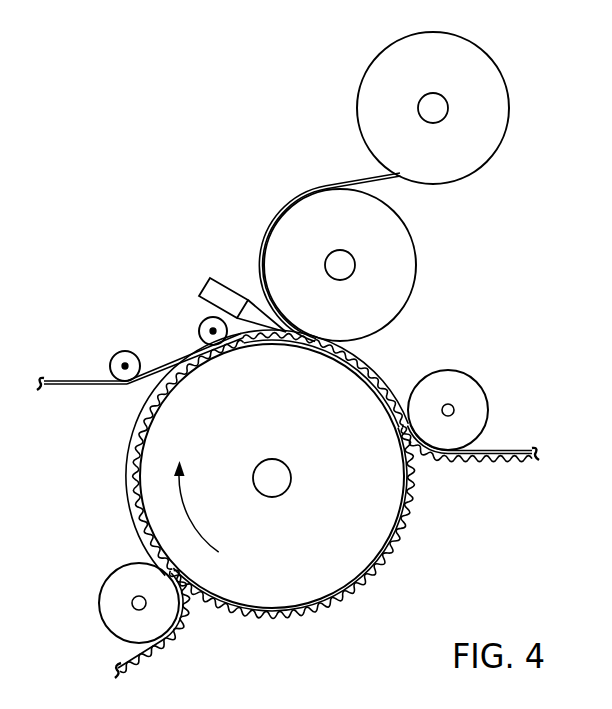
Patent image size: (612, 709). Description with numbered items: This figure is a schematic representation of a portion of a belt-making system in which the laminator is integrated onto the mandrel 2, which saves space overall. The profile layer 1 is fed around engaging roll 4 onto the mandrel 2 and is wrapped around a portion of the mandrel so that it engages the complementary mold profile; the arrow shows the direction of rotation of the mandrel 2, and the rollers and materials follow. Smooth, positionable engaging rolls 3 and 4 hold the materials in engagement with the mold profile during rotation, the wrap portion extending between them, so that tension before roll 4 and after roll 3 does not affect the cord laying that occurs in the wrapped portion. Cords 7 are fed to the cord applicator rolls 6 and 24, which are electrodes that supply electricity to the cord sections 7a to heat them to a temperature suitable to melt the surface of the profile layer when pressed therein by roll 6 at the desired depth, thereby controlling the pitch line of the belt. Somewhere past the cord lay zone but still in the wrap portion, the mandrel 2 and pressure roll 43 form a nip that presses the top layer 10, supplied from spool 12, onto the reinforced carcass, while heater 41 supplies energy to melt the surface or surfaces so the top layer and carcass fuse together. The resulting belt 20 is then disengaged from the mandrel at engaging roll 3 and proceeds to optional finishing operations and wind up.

The profile layer 1 is at (143, 660).
The mandrel 2 is at (338, 577).
The engaging roll 3 is at (461, 381).
The engaging roll 4 is at (117, 582).
The cord applicator roll 6 is at (200, 328).
The cords 7 is at (75, 381).
The cord sections 7a is at (163, 367).
The top layer material 10 is at (368, 177).
The spool 12 is at (490, 140).
The belt 20 is at (508, 452).
The cord applicator roll 24 is at (120, 352).
The heater 41 is at (210, 279).
The pressure roll 43 is at (403, 236).